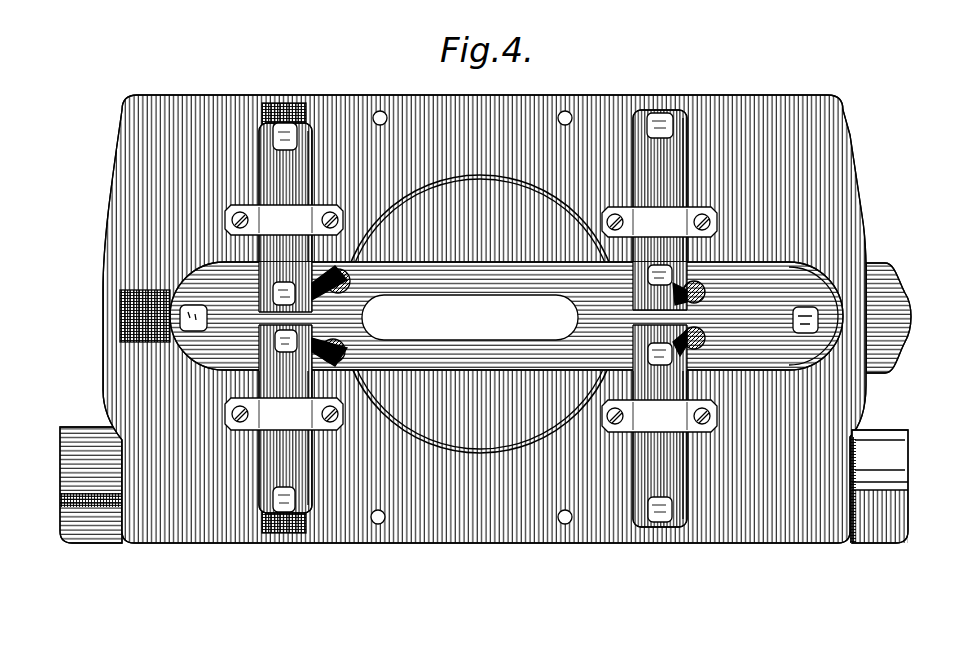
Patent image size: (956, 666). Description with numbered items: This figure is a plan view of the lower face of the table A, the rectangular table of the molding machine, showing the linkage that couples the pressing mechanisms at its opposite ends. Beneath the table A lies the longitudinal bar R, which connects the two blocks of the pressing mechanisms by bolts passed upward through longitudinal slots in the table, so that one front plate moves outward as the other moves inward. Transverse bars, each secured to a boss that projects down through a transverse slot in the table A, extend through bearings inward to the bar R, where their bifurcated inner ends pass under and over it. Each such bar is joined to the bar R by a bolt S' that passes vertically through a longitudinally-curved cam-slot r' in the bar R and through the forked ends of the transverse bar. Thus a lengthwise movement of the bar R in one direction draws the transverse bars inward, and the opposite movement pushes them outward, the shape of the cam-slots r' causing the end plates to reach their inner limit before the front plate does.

The table A is at (485, 319).
The bar R is at (589, 302).
The bolt S' is at (453, 317).
The cam-slot r' is at (509, 316).